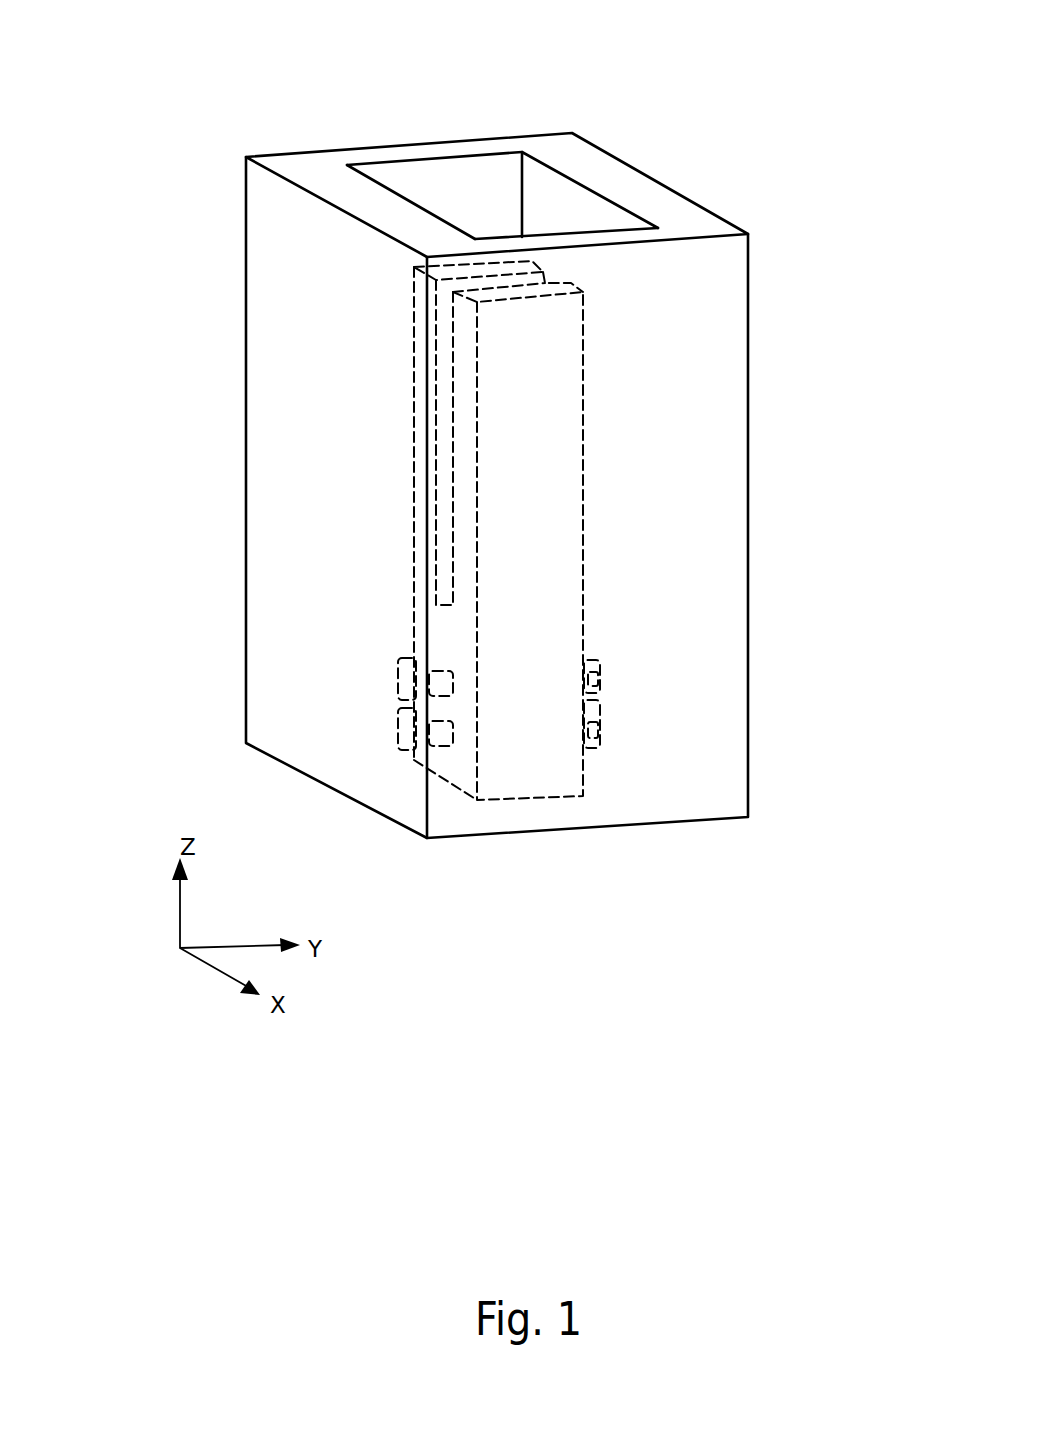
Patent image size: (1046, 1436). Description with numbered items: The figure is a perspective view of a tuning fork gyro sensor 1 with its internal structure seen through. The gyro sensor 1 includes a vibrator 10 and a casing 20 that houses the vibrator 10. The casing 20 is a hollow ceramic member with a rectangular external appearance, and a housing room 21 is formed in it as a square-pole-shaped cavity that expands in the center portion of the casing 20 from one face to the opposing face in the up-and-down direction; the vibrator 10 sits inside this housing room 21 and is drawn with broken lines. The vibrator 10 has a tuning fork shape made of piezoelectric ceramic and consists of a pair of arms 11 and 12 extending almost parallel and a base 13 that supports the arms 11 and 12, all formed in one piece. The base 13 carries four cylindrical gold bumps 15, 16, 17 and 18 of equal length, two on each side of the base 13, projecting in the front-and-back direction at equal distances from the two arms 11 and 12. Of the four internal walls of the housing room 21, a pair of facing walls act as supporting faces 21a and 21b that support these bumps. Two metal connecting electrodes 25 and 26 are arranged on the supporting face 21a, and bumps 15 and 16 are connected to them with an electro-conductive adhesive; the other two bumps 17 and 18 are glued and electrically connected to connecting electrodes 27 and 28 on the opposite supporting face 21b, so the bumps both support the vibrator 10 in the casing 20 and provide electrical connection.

The gyro sensor 1 is at (266, 79).
The vibrator 10 is at (595, 320).
The arm 11 is at (420, 358).
The arm 12 is at (547, 376).
The base 13 is at (413, 622).
The bump 15 is at (452, 693).
The bump 16 is at (452, 743).
The bump 17 is at (592, 663).
The bump 18 is at (605, 730).
The casing 20 is at (652, 153).
The housing room 21 is at (497, 167).
The supporting face 21a is at (433, 192).
The supporting face 21b is at (567, 197).
The connecting electrode 25 is at (397, 665).
The connecting electrode 26 is at (397, 717).
The connecting electrode 27 is at (605, 685).
The connecting electrode 28 is at (603, 737).